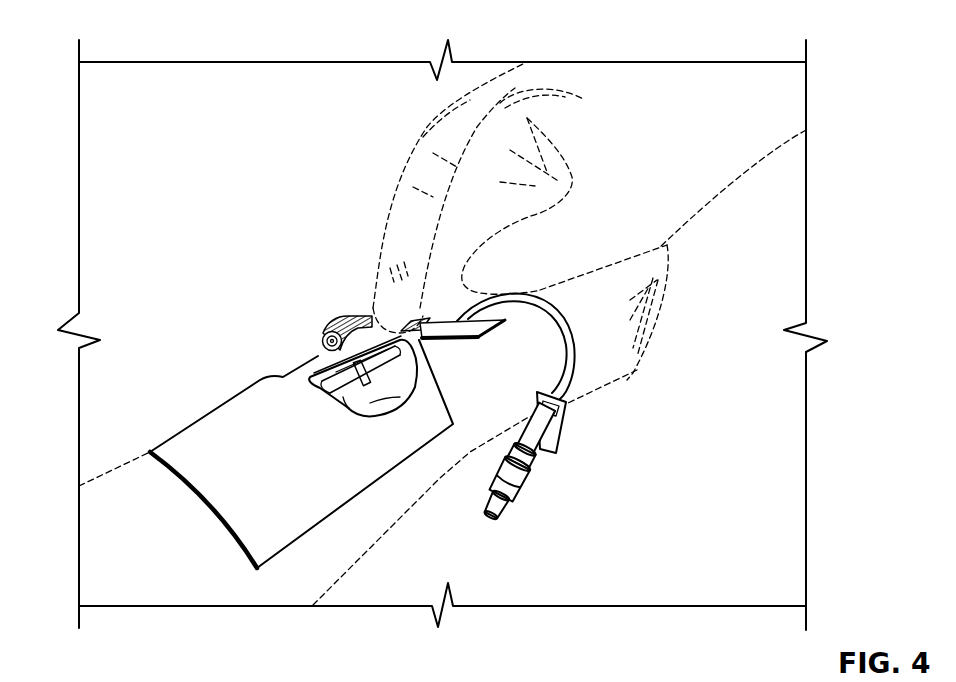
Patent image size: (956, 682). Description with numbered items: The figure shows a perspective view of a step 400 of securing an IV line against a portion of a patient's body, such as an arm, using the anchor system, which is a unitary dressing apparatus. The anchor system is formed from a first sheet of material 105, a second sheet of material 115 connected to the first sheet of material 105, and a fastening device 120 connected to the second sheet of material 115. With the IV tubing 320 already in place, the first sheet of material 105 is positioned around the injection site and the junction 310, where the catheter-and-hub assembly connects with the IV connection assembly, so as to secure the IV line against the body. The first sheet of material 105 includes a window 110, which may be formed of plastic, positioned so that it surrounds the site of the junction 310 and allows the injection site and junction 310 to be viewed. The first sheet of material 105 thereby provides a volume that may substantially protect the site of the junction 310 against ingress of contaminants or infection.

The step of securing the IV line 400 is at (110, 36).
The first sheet of material 105 is at (215, 448).
The window 110 is at (390, 405).
The second sheet of material 115 is at (478, 325).
The fastening device 120 is at (355, 317).
The junction 310 is at (340, 350).
The IV tubing 320 is at (570, 357).